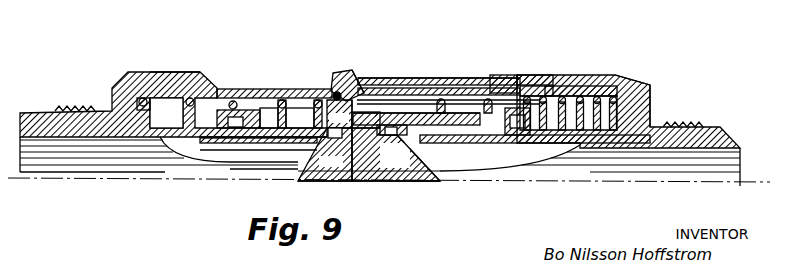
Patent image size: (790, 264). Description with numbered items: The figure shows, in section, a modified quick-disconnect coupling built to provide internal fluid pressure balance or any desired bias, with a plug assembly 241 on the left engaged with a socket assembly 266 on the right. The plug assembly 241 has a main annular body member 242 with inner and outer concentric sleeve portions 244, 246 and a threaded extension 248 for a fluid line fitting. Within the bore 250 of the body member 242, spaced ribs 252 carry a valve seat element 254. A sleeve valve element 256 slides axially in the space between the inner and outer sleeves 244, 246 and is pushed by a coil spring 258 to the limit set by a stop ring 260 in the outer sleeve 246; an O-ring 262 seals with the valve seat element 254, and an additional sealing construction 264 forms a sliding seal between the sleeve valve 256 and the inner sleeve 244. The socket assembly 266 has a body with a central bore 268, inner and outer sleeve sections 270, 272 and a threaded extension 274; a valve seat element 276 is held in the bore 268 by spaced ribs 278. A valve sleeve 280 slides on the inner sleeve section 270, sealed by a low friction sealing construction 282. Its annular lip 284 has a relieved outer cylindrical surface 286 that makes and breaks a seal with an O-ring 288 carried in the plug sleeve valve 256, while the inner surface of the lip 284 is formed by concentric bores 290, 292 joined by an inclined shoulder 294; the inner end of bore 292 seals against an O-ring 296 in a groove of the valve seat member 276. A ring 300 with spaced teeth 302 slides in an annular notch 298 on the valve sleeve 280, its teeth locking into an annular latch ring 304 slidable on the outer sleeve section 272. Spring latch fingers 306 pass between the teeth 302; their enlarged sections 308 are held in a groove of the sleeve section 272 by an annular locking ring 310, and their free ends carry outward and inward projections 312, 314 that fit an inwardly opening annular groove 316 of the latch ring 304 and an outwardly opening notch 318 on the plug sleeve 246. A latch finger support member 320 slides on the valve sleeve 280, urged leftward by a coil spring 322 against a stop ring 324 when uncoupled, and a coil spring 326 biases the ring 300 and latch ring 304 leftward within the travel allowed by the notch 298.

The plug assembly 241 is at (187, 70).
The main annular body member 242 is at (140, 72).
The inner sleeve portion 244 is at (212, 125).
The outer sleeve portion 246 is at (264, 98).
The threaded extension 248 is at (72, 108).
The bore 250 is at (97, 139).
The spaced ribs 252 is at (233, 164).
The valve seat element 254 is at (318, 181).
The sleeve valve element 256 is at (294, 100).
The coil spring 258 is at (184, 118).
The stop ring 260 is at (267, 105).
The O-ring 262 is at (320, 140).
The additional sealing construction 264 is at (235, 100).
The socket assembly 266 is at (602, 70).
The central bore 268 is at (740, 148).
The inner sleeve section 270 is at (510, 158).
The outer sleeve section 272 is at (626, 92).
The threaded extension 274 is at (683, 123).
The valve seat element 276 is at (410, 181).
The spaced ribs 278 is at (495, 173).
The valve sleeve 280 is at (460, 98).
The low friction sealing construction 282 is at (503, 137).
The annular lip 284 is at (352, 181).
The relieved outer cylindrical surface 286 is at (398, 112).
The O-ring 288 is at (365, 119).
The bore 290 is at (325, 154).
The bore 292 is at (418, 158).
The inclined shoulder 294 is at (396, 154).
The O-ring 296 is at (436, 109).
The annular notch 298 is at (518, 86).
The ring 300 is at (478, 96).
The spaced teeth 302 is at (512, 76).
The annular latch ring 304 is at (418, 78).
The spring latch fingers 306 is at (433, 88).
The integral enlarged sections 308 is at (550, 97).
The annular locking ring 310 is at (560, 98).
The outwardly extending projection 312 is at (354, 78).
The inwardly extending projection 314 is at (377, 112).
The inwardly opening annular groove 316 is at (338, 70).
The outwardly opening notch 318 is at (339, 114).
The annular latch finger support member 320 is at (406, 78).
The coil spring 322 is at (450, 143).
The stop ring 324 is at (392, 123).
The coil spring 326 is at (637, 86).